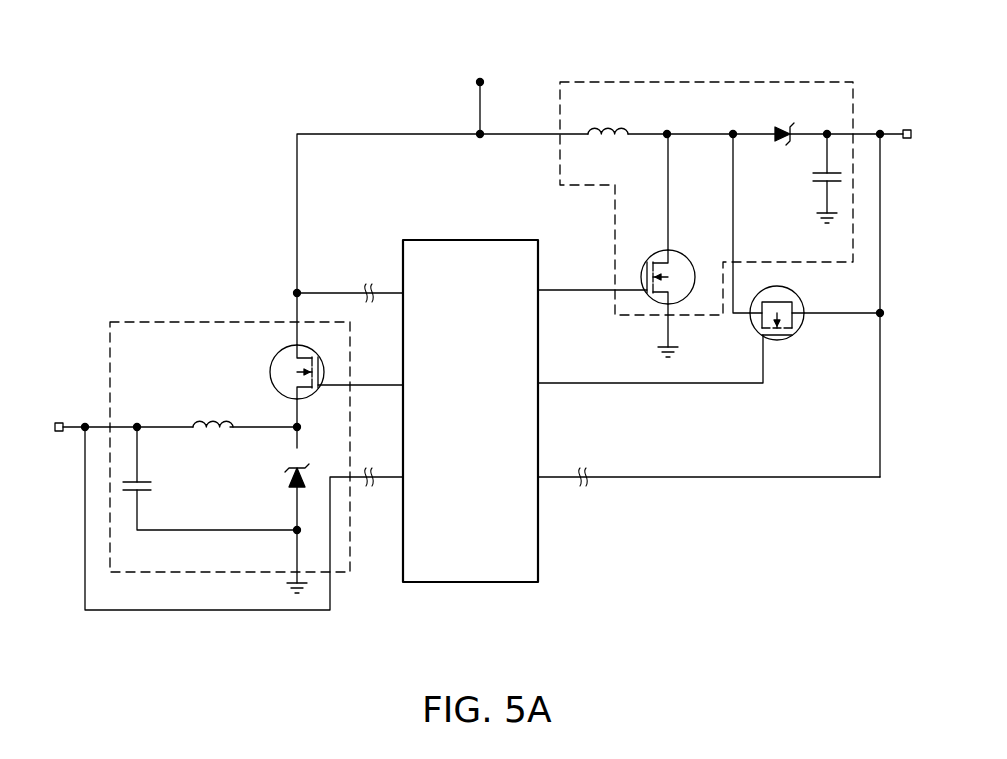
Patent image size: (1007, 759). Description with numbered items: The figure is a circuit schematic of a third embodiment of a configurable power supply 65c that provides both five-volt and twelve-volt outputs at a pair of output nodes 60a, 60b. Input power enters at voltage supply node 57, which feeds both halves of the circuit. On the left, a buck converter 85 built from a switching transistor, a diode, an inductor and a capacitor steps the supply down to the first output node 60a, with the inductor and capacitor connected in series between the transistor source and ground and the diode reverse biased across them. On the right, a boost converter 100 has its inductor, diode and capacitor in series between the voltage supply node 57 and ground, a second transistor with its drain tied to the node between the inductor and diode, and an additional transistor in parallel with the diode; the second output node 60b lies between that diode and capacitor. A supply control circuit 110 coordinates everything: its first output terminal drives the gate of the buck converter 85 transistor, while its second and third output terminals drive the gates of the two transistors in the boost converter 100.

The voltage supply node 57 is at (483, 84).
The output node 60a is at (60, 435).
The voltage supply node 60b is at (907, 140).
The configurable power supply 65c is at (262, 666).
The buck converter 85 is at (148, 321).
The boost converter 100 is at (800, 82).
The supply control circuit 110 is at (490, 240).